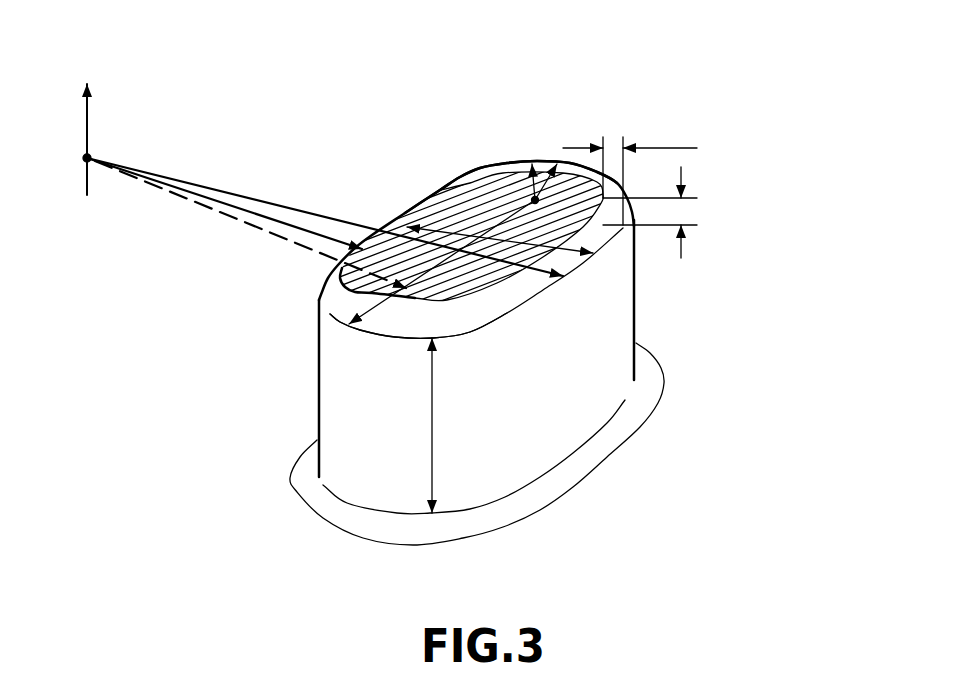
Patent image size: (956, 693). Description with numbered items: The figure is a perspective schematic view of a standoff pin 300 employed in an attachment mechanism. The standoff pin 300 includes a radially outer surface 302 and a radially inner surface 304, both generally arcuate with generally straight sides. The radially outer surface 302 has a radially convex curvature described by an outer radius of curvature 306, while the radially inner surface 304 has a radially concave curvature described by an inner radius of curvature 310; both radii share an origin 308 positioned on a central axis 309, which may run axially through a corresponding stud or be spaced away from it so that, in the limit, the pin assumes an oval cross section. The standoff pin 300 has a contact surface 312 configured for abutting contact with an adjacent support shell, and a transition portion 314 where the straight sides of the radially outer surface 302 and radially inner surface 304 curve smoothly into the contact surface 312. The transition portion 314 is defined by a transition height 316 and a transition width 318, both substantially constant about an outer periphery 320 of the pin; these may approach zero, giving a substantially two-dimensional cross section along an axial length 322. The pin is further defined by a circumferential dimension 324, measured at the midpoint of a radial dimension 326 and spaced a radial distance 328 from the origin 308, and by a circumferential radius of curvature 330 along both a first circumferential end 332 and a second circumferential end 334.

The standoff pin 300 is at (707, 130).
The radially outer surface 302 is at (612, 343).
The radially inner surface 304 is at (323, 282).
The outer radius of curvature 306 is at (337, 217).
The origin 308 is at (90, 152).
The central axis 309 is at (87, 182).
The inner radius of curvature 310 is at (227, 201).
The contact surface 312 is at (493, 183).
The transition portion 314 is at (387, 327).
The transition height 316 is at (681, 167).
The transition width 318 is at (657, 148).
The outer periphery 320 is at (328, 298).
The axial length 322 is at (433, 474).
The circumferential dimension 324 is at (447, 278).
The radial dimension 326 is at (570, 252).
The radial distance 328 is at (222, 215).
The circumferential radius of curvature 330 is at (528, 197).
The first circumferential end 332 is at (467, 170).
The second circumferential end 334 is at (408, 338).